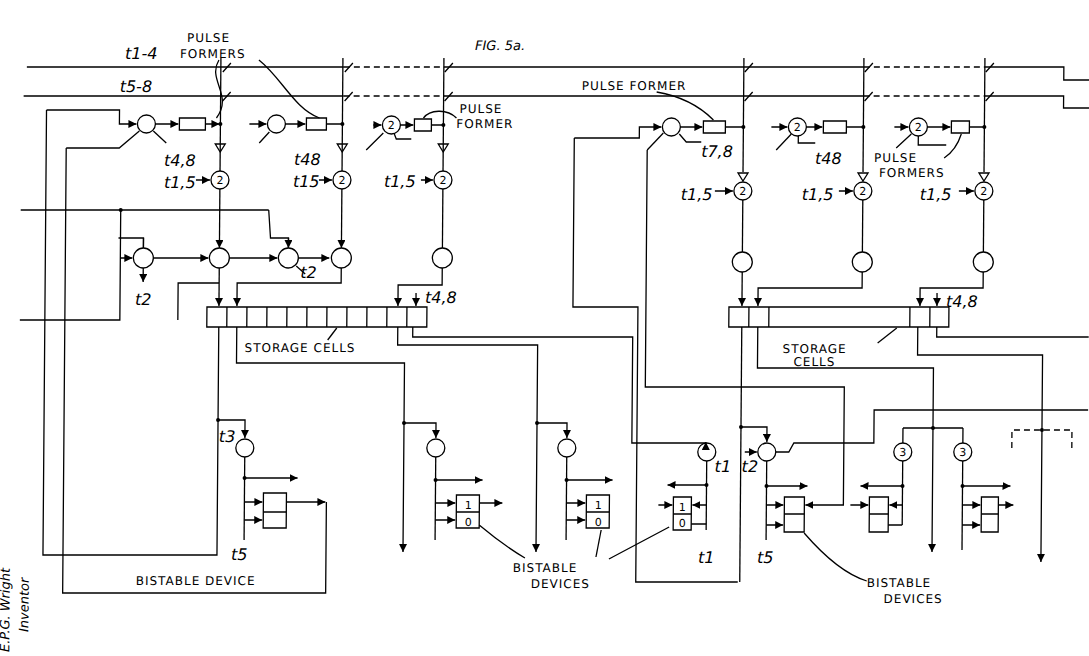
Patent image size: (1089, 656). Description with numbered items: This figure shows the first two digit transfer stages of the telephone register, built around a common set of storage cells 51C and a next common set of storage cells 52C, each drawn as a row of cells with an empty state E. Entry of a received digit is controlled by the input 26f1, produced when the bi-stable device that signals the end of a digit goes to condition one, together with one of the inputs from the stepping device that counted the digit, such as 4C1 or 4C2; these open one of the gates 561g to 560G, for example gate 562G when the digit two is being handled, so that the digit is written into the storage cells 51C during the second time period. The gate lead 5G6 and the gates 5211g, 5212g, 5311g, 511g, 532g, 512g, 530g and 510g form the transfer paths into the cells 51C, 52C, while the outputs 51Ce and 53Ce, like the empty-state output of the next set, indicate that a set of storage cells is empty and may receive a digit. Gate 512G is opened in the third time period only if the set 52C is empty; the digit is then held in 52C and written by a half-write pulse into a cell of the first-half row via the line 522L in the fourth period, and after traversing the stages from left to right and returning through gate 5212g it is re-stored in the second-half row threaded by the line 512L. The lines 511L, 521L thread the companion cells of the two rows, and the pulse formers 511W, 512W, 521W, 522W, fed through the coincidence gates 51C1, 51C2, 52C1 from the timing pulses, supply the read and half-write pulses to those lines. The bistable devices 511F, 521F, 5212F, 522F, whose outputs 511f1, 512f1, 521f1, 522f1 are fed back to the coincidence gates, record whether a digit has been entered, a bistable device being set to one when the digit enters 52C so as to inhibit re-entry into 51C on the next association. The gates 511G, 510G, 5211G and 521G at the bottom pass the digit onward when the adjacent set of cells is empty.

The lead line 511L is at (222, 97).
The line 512L is at (369, 114).
The lead line 521L is at (745, 98).
The line 522L is at (865, 98).
The pulse former 511W is at (190, 116).
The pulse former 512W is at (315, 116).
The pulse former 521W is at (713, 118).
The pulse former 522W is at (856, 112).
The coincidence gate 51C1 is at (118, 125).
The coincidence gate 51C2 is at (255, 122).
The coincidence gate 52C1 is at (637, 127).
The feedback lead 511f1 is at (102, 153).
The feedback lead 512f1 is at (308, 149).
The feedback lead 521f1 is at (627, 149).
The feedback lead 522f1 is at (769, 154).
The gate lead 5G6 is at (145, 200).
The input 26f1 is at (184, 230).
The input from stepping device 4C1 is at (118, 259).
The input from stepping device 4C2 is at (280, 265).
The gate 5211g is at (212, 250).
The gate 5212g is at (335, 250).
The gate 561g is at (210, 264).
The gate 562G is at (249, 287).
The set of storage cells 51C is at (317, 309).
The set of common storage cells 52C is at (256, 452).
The gate 560G is at (455, 248).
The gate 5311g is at (701, 269).
The gate 511g is at (733, 268).
The gate 532g is at (836, 261).
The gate 512g is at (853, 268).
The gate 530g is at (953, 261).
The gate 510g is at (975, 256).
The gate 511G is at (261, 441).
The gate 512G is at (455, 443).
The gate 510G is at (588, 442).
The gate 5211G is at (678, 446).
The gate 521G is at (792, 449).
The gate input 51Ce is at (698, 453).
The gate input 53Ce is at (792, 455).
The bistable device 511F is at (260, 560).
The bistable device 521F is at (814, 516).
The bistable device 5212F is at (917, 565).
The bistable device 522F is at (928, 572).